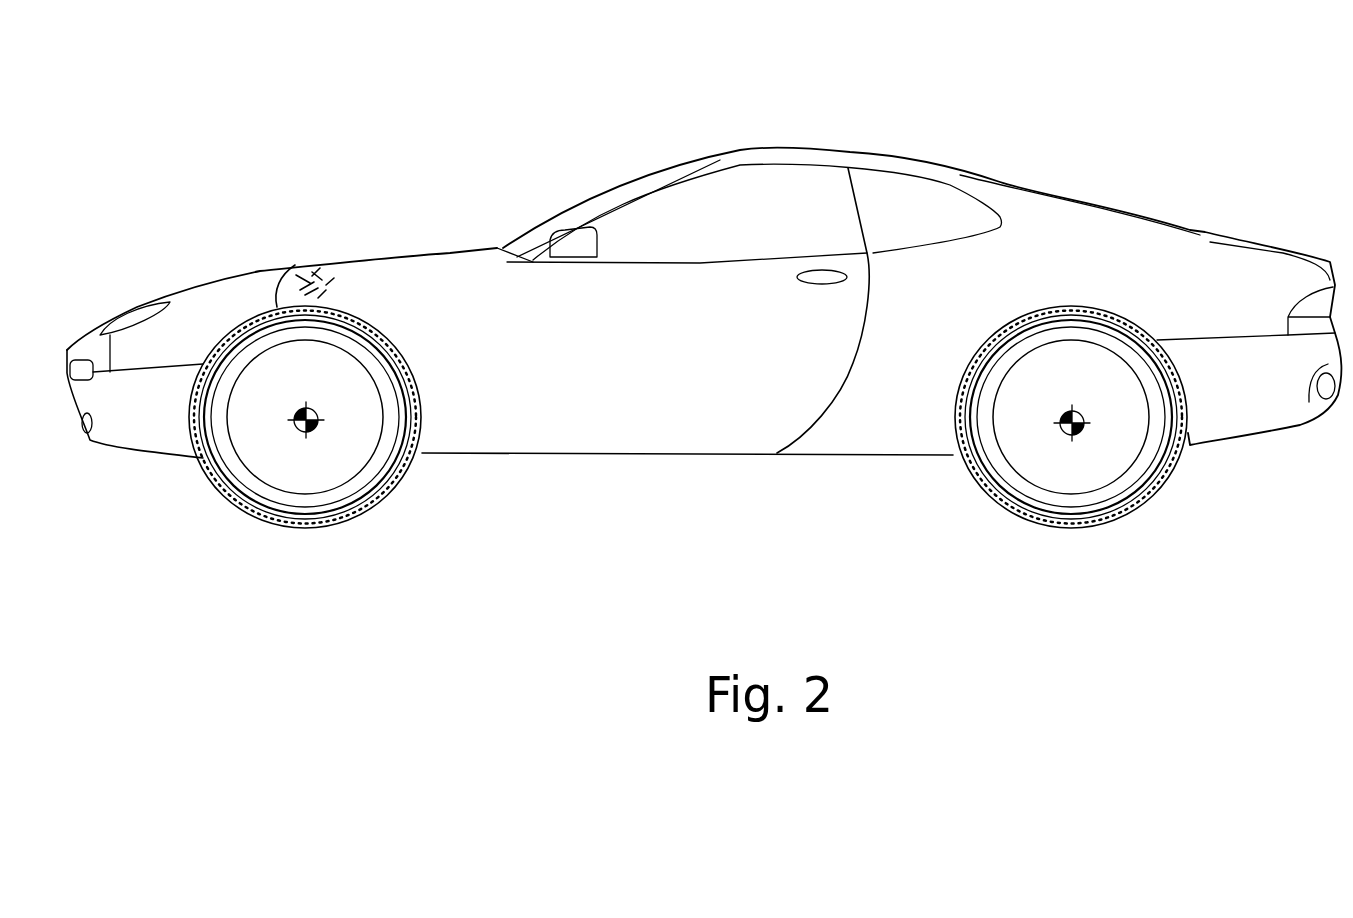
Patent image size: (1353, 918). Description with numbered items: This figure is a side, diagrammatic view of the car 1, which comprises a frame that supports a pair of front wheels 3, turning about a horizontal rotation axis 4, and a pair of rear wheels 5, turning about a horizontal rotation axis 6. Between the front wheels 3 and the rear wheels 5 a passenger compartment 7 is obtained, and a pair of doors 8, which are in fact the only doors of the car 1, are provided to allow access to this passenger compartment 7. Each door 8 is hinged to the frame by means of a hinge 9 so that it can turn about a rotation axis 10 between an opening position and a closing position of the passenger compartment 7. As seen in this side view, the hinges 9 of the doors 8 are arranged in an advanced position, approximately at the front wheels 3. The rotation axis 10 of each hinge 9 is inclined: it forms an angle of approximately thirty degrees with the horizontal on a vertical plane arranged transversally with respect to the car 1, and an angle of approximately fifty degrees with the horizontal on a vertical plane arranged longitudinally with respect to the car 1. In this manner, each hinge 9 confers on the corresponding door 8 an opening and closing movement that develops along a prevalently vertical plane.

The car 1 is at (1010, 150).
The front wheels 3 is at (273, 502).
The rotation axis 4 is at (310, 427).
The rear wheels 5 is at (1042, 503).
The rotation axis 6 is at (1076, 430).
The passenger compartment 7 is at (812, 465).
The doors 8 is at (600, 345).
The hinge 9 is at (292, 258).
The rotation axis 10 is at (337, 250).